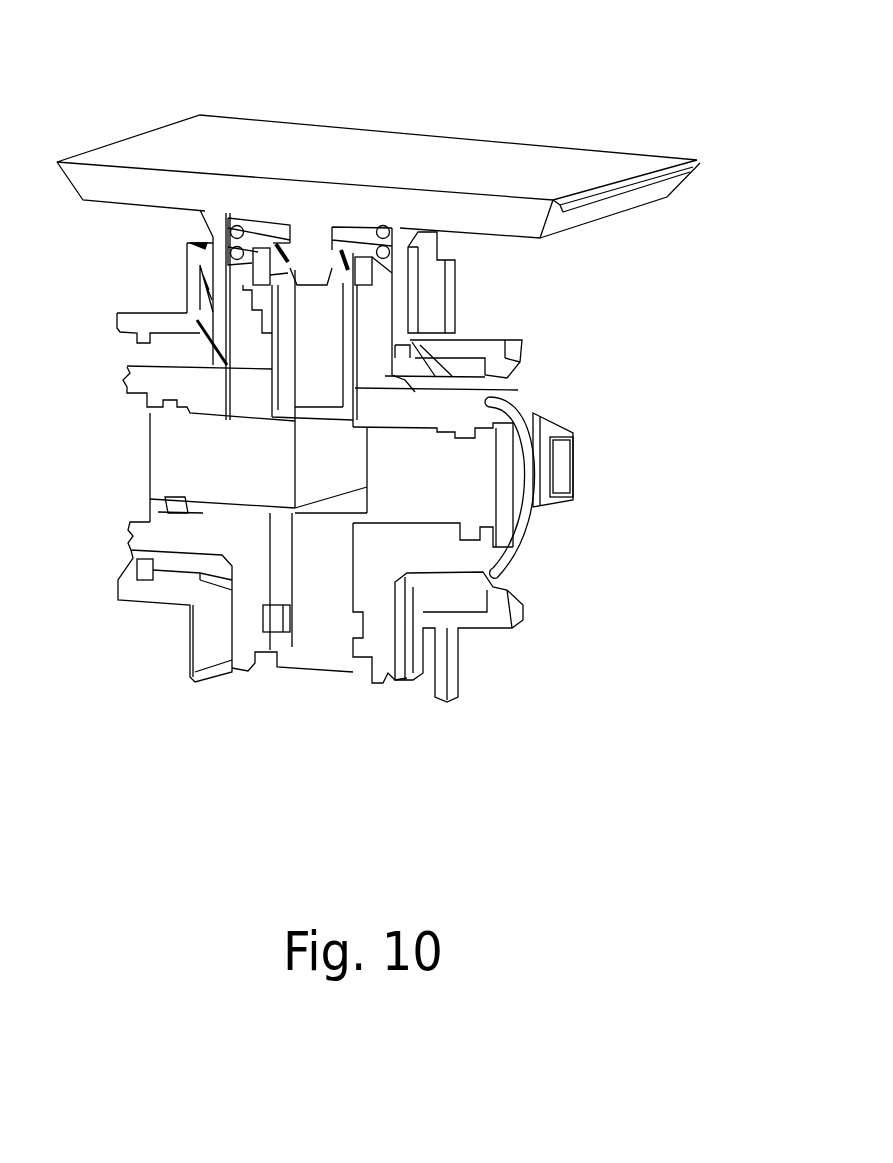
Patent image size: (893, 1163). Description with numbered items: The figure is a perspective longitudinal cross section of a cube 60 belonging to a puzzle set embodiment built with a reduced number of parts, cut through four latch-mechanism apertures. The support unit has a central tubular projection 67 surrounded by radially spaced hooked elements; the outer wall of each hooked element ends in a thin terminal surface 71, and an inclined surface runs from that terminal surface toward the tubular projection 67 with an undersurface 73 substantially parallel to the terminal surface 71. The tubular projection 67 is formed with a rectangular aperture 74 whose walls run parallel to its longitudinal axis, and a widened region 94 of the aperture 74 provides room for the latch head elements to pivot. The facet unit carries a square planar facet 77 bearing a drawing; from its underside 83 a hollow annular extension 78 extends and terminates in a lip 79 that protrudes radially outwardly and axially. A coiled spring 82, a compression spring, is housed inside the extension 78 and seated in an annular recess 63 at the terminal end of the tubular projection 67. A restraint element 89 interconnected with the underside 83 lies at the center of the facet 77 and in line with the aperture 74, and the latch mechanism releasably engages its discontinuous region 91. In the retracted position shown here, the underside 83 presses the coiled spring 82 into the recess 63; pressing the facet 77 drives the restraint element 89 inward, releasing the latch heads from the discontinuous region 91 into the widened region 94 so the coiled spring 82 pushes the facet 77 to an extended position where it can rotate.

The cube 60 is at (719, 391).
The annular recess 63 is at (128, 376).
The tubular projection 67 is at (172, 388).
The terminal surface 71 is at (205, 238).
The undersurface 73 is at (208, 268).
The aperture 74 is at (322, 383).
The facet 77 is at (508, 158).
The annular extension 78 is at (400, 312).
The lip 79 is at (418, 328).
The coiled spring 82 is at (250, 225).
The underside 83 is at (503, 237).
The restraint element 89 is at (312, 270).
The discontinuous region 91 is at (345, 250).
The widened region 94 is at (272, 253).